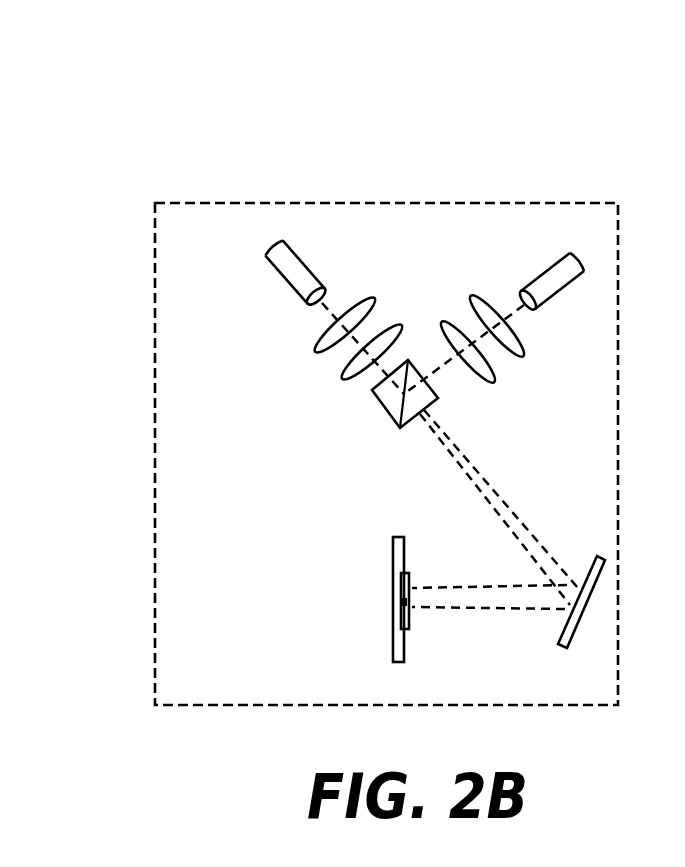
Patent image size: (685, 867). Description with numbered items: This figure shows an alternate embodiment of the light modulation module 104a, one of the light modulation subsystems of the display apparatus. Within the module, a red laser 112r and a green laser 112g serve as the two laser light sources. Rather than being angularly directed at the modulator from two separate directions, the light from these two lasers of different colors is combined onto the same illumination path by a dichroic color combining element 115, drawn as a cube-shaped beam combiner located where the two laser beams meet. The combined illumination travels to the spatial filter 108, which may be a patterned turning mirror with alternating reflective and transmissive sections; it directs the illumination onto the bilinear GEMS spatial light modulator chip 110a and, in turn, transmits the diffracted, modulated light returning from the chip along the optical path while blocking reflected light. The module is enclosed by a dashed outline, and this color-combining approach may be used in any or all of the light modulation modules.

The light modulation module 104a is at (153, 440).
The red laser 112r is at (278, 243).
The green laser 112g is at (575, 250).
The dichroic color combining element 115 is at (382, 407).
The spatial filter 108 is at (588, 553).
The bilinear GEMS spatial light modulator chip 110a is at (393, 598).